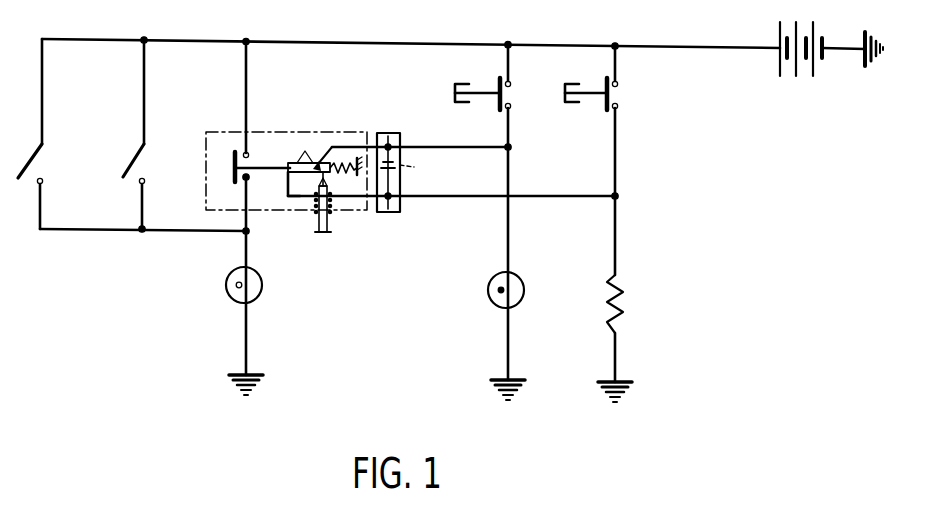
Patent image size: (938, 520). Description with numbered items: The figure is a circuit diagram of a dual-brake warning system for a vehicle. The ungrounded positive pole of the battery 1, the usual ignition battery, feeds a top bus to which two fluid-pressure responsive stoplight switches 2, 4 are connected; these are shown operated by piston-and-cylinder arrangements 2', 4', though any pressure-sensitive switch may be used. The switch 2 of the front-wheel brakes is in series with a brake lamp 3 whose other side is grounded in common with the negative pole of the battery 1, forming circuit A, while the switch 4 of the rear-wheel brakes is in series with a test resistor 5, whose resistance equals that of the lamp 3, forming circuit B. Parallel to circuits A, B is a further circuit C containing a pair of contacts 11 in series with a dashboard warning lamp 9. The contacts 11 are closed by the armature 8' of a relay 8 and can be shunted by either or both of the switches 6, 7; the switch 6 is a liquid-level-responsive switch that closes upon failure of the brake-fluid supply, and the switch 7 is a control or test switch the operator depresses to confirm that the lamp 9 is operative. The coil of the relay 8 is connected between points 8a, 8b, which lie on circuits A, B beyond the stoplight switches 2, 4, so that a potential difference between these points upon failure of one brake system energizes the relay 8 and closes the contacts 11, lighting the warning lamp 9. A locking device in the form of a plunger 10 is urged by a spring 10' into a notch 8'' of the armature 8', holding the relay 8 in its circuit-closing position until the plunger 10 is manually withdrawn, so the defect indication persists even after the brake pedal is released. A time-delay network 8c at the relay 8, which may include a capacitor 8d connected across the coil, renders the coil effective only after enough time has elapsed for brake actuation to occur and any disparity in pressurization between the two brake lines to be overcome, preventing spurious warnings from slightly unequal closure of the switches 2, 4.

The battery 1 is at (788, 79).
The stoplight switch 2 is at (483, 77).
The piston-and-cylinder arrangement 2' is at (445, 110).
The brake lamp 3 is at (487, 290).
The stoplight switch 4 is at (608, 78).
The piston-and-cylinder arrangement 4' is at (565, 116).
The test resistor 5 is at (636, 298).
The liquid-level-responsive switch 6 is at (145, 170).
The test switch 7 is at (43, 169).
The relay 8 is at (286, 144).
The armature 8' is at (292, 144).
The notch 8'' is at (335, 134).
The point 8a is at (512, 150).
The point 8b is at (619, 196).
The time-delay network 8c is at (387, 213).
The capacitor 8d is at (423, 175).
The warning lamp 9 is at (231, 300).
The plunger 10 is at (343, 217).
The spring 10' is at (309, 227).
The contacts 11 is at (250, 158).
The circuit A is at (510, 238).
The circuit B is at (617, 242).
The circuit C is at (244, 243).